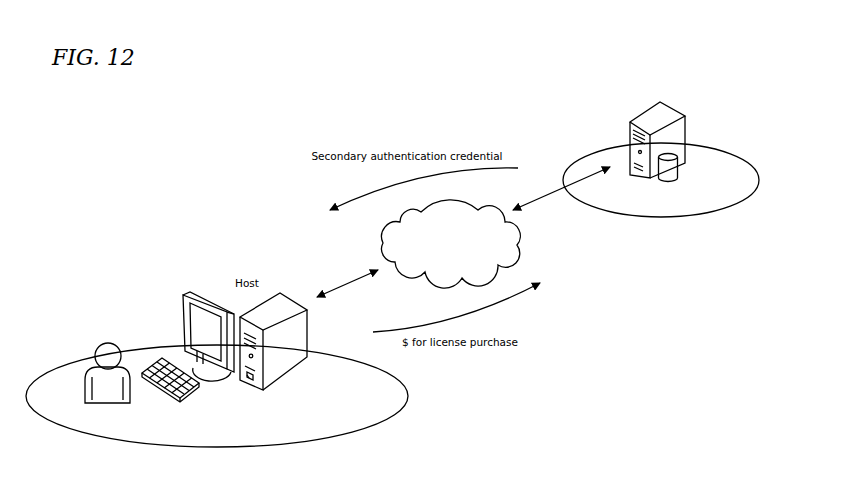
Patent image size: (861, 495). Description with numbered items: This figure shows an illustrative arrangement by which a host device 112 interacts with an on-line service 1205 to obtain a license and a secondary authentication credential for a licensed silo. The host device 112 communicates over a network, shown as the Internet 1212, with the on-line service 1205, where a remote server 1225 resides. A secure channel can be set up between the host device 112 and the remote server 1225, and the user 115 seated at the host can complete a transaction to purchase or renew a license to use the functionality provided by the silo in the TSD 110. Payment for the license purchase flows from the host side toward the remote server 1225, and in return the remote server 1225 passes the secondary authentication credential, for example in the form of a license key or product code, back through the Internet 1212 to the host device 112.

The on-line service 1205 is at (760, 193).
The remote server 1225 is at (687, 125).
The Internet 1212 is at (517, 238).
The host device 112 is at (309, 334).
The TSD 110 is at (250, 382).
The user 115 is at (85, 385).